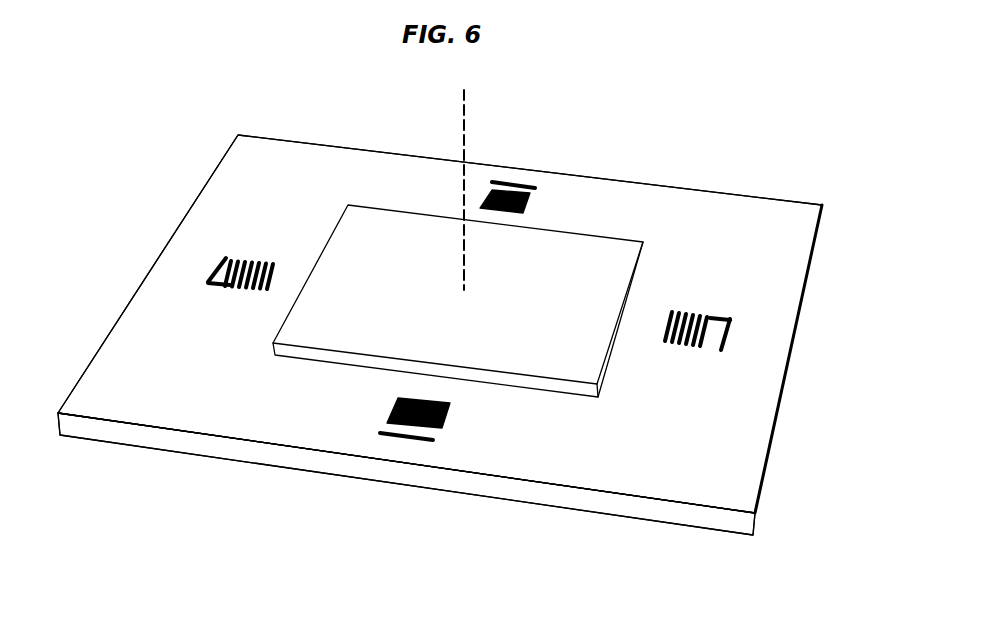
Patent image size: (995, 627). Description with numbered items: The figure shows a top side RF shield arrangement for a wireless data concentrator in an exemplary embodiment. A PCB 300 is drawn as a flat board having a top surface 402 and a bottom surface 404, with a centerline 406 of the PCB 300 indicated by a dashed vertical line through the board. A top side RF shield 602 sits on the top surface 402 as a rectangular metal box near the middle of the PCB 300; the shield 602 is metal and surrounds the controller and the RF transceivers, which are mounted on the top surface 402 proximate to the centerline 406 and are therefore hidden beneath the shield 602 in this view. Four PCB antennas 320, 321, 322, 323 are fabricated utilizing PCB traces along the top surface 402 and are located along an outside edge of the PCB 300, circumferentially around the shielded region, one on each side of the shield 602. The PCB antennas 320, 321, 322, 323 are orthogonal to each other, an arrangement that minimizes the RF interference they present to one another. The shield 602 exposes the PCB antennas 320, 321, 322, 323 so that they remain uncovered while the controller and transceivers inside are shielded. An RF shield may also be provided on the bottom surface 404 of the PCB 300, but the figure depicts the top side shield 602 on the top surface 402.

The PCB 300 is at (727, 192).
The PCB antenna 320 is at (531, 186).
The PCB antenna 321 is at (718, 316).
The PCB antenna 322 is at (437, 439).
The PCB antenna 323 is at (216, 268).
The top surface 402 is at (725, 463).
The bottom surface 404 is at (636, 528).
The centerline 406 is at (464, 117).
The top side RF shield 602 is at (622, 252).